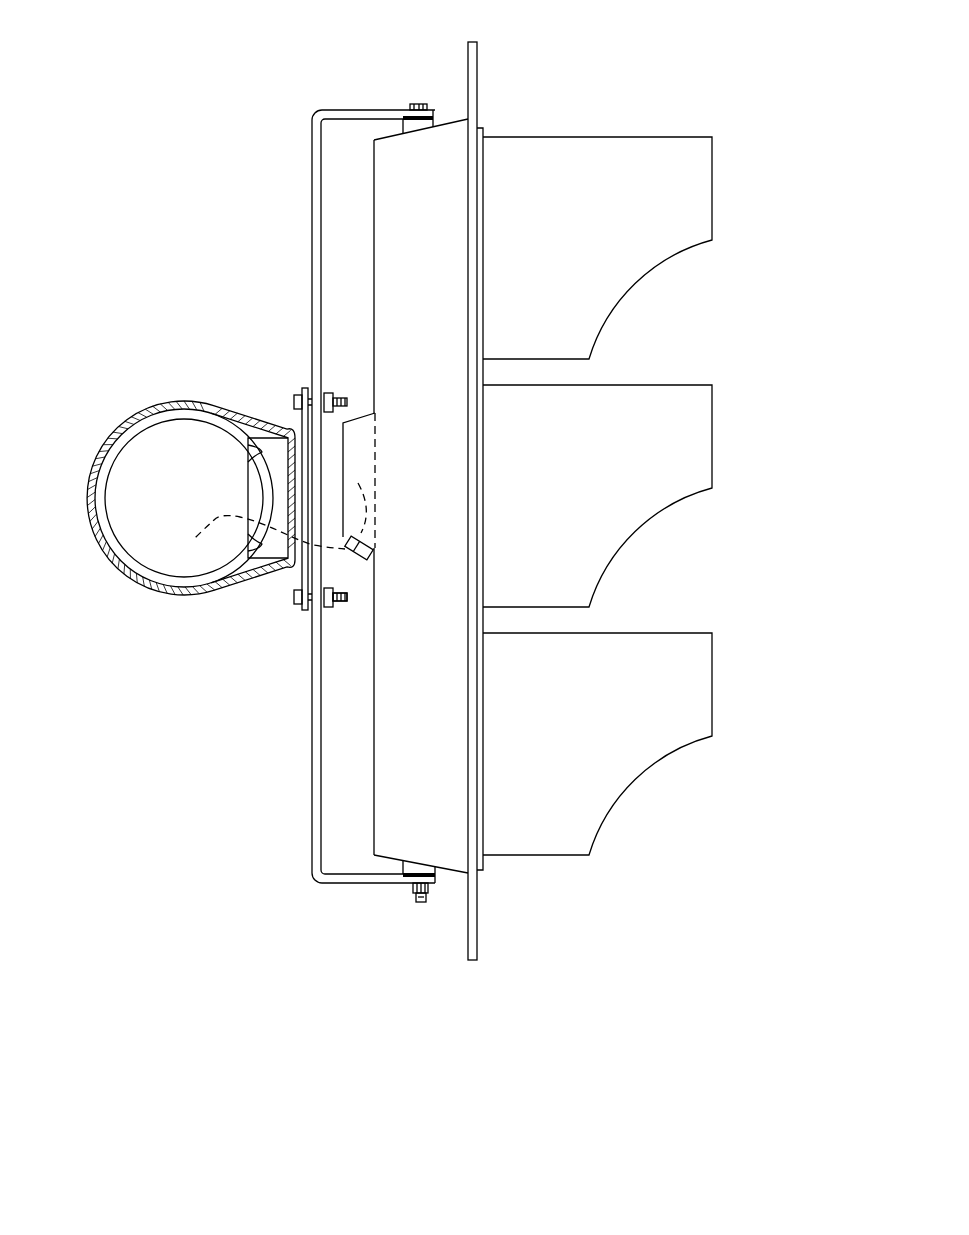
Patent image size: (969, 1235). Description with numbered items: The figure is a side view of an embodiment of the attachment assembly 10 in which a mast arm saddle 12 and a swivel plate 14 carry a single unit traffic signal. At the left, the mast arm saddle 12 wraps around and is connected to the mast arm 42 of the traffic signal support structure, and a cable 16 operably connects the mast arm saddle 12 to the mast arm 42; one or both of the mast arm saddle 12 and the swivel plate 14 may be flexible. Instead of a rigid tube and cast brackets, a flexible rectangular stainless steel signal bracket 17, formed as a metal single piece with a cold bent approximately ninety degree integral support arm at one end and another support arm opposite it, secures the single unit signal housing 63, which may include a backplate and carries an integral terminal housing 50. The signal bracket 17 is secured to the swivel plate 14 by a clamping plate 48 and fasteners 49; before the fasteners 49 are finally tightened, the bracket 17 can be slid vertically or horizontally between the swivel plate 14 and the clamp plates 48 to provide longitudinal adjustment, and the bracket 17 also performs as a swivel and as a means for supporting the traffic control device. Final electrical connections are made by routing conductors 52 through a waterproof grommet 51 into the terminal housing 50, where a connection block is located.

The attachment assembly 10 is at (160, 270).
The mast arm saddle 12 is at (262, 565).
The swivel plate 14 is at (307, 612).
The cable 16 is at (266, 421).
The signal bracket 17 is at (323, 107).
The mast arm 42 is at (106, 484).
The clamping plate 48 is at (328, 394).
The fasteners 49 is at (340, 595).
The terminal housing 50 is at (358, 453).
The waterproof grommet 51 is at (368, 546).
The conductors 52 is at (216, 518).
The single unit signal housing 63 is at (531, 106).